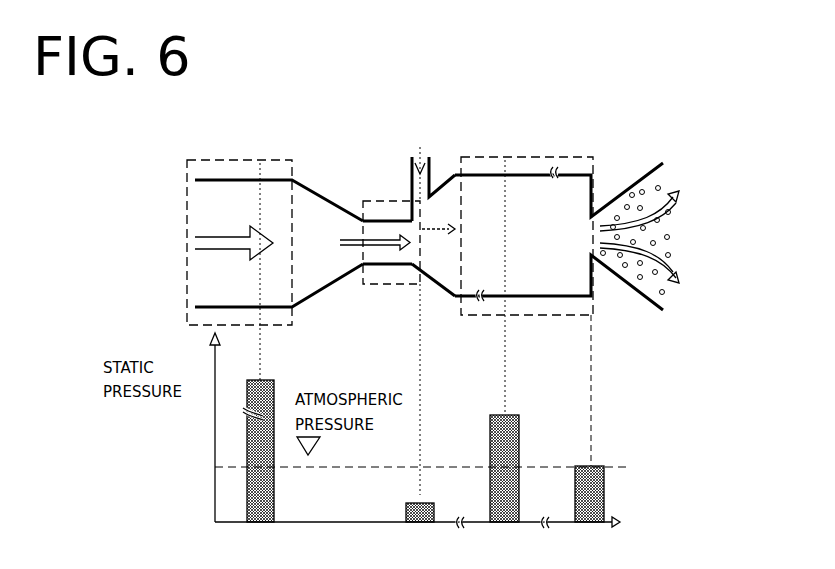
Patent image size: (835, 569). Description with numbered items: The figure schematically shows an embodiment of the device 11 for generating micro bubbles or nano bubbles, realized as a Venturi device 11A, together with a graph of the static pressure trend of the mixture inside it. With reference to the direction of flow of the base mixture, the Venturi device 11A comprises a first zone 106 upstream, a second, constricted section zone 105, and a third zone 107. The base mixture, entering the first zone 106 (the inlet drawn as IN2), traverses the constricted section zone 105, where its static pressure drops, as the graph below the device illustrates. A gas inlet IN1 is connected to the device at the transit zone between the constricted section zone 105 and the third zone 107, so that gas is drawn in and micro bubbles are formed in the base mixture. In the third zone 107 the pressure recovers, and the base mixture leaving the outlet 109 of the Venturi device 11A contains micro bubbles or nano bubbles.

The device for generating micro bubbles 11 is at (419, 259).
The Venturi device 11A is at (580, 137).
The constricted section zone 105 is at (373, 213).
The first zone 106 is at (237, 198).
The third zone 107 is at (527, 203).
The outlet 109 is at (695, 235).
The gas inlet IN1 is at (432, 128).
The second inlet (gas) IN2 is at (176, 273).